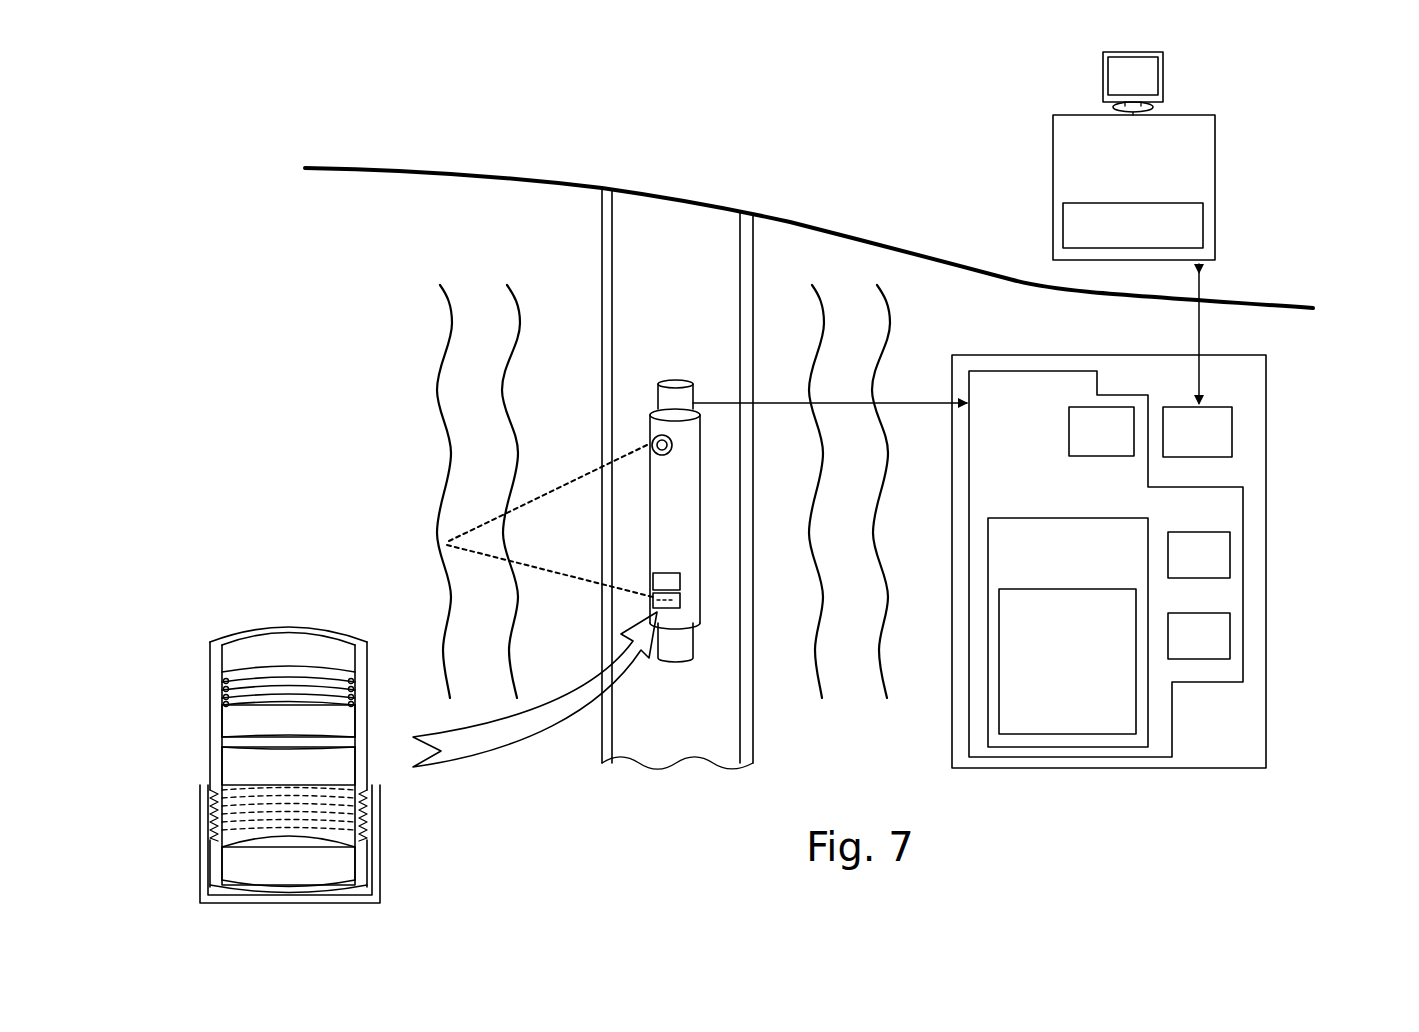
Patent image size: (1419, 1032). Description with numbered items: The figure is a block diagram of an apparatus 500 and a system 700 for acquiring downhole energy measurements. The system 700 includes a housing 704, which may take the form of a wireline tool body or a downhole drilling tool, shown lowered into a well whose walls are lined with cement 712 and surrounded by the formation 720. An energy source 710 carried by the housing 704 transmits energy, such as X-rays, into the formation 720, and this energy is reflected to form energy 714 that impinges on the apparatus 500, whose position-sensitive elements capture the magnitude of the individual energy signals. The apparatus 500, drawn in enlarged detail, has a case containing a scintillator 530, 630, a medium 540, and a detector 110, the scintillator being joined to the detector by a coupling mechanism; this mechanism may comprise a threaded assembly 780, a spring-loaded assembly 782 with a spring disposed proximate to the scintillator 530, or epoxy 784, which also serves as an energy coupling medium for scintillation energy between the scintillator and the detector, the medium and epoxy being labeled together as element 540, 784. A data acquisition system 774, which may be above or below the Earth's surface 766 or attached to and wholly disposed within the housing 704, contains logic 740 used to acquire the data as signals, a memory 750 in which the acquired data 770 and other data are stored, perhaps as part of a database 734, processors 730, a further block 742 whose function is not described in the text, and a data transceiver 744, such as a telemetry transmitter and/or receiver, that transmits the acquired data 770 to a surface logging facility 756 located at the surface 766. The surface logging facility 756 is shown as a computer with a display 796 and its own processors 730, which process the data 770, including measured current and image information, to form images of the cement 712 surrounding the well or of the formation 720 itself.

The system 700 is at (1314, 90).
The surface 766 is at (427, 167).
The cement 712 is at (605, 278).
The formation 720 is at (503, 347).
The energy 714 is at (565, 580).
The housing 704 is at (675, 374).
The energy source 710 is at (655, 440).
The data 770 is at (908, 404).
The apparatus 500 is at (682, 580).
The spring-loaded assembly 782 is at (364, 688).
The scintillator 530 is at (358, 721).
The window 630 is at (337, 717).
The medium 540 is at (372, 771).
The epoxy 784 is at (332, 763).
The threaded assembly 780 is at (382, 826).
The detector 110 is at (348, 867).
The surface logging facility 756 is at (1160, 153).
The display 796 is at (1103, 75).
The processors 730 is at (1130, 202).
The data acquisition system 774 is at (1266, 427).
The logic 740 is at (1090, 406).
The data transceiver 744 is at (1188, 406).
The memory 750 is at (1068, 517).
The database 734 is at (1054, 588).
The controller module 742 is at (1222, 531).